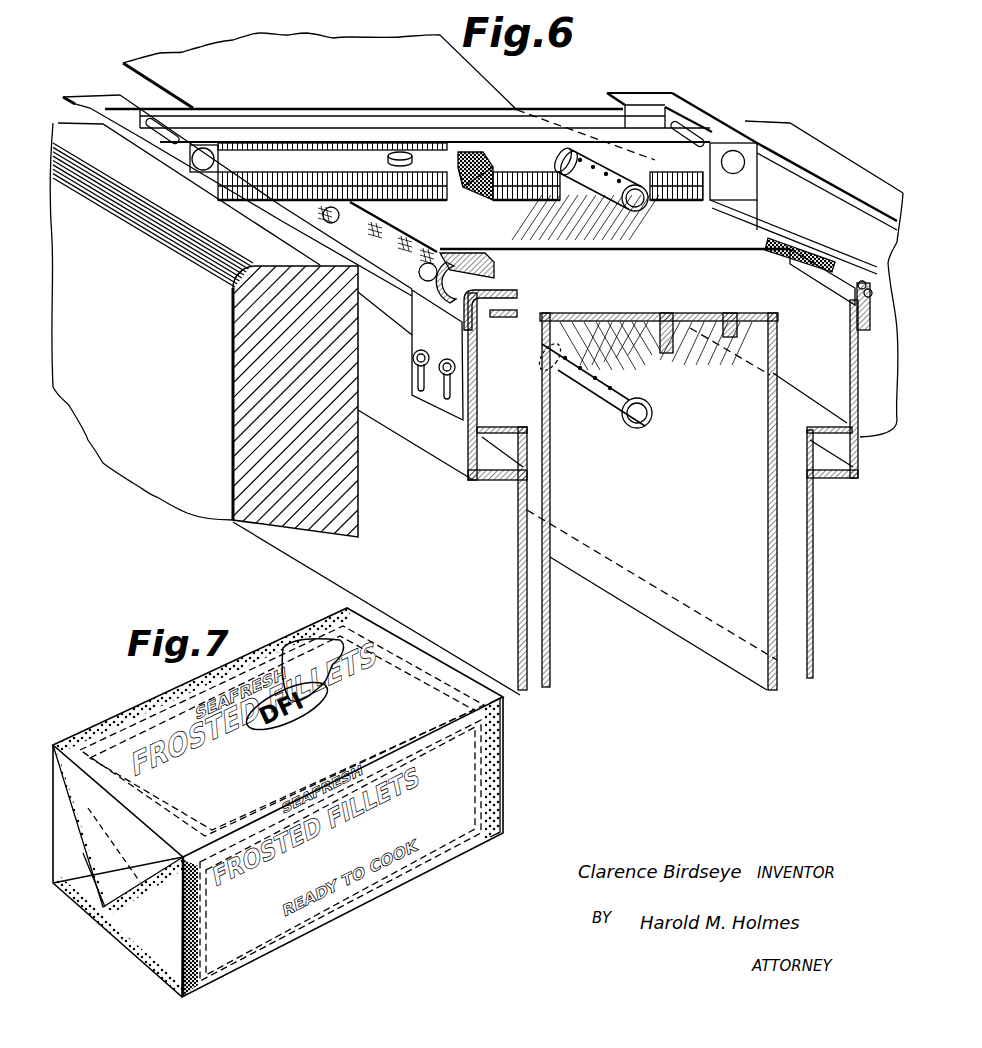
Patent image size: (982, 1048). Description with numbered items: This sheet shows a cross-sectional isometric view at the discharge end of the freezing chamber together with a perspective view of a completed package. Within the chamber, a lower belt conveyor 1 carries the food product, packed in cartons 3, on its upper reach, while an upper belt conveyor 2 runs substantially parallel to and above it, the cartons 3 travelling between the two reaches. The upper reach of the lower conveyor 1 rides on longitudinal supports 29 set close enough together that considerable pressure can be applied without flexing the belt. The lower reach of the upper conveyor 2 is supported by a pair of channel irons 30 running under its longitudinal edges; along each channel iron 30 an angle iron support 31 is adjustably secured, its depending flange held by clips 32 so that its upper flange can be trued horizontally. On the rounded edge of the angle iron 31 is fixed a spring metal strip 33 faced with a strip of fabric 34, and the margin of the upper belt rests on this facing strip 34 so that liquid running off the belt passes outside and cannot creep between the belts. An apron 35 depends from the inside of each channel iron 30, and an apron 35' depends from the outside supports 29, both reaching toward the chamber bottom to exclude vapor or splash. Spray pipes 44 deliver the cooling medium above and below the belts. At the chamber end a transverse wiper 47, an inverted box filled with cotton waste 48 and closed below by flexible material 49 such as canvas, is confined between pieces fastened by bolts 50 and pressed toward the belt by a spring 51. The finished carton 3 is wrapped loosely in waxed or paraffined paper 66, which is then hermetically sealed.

In FIG. 6, the lower belt conveyor 1 is at (728, 322).
In FIG. 6, the upper belt conveyor 2 is at (750, 235).
In FIG. 7, the carton 3 is at (473, 750).
In FIG. 6, the support 29 is at (655, 328).
In FIG. 6, the channel iron 30 is at (457, 469).
In FIG. 6, the angle iron support 31 is at (493, 295).
In FIG. 6, the clip 32 is at (430, 403).
In FIG. 6, the spring metal strip 33 is at (412, 332).
In FIG. 6, the strip of fabric 34 is at (450, 260).
In FIG. 6, the apron 35 is at (691, 558).
In FIG. 6, the apron 35' is at (659, 507).
In FIG. 6, the spray pipe 44 is at (607, 157).
In FIG. 6, the transverse wiper 47 is at (500, 157).
In FIG. 6, the cotton waste 48 is at (543, 177).
In FIG. 6, the flexible material 49 is at (472, 200).
In FIG. 6, the bolt 50 is at (180, 137).
In FIG. 6, the spring 51 is at (392, 152).
In FIG. 7, the waxed or paraffined paper 66 is at (58, 745).